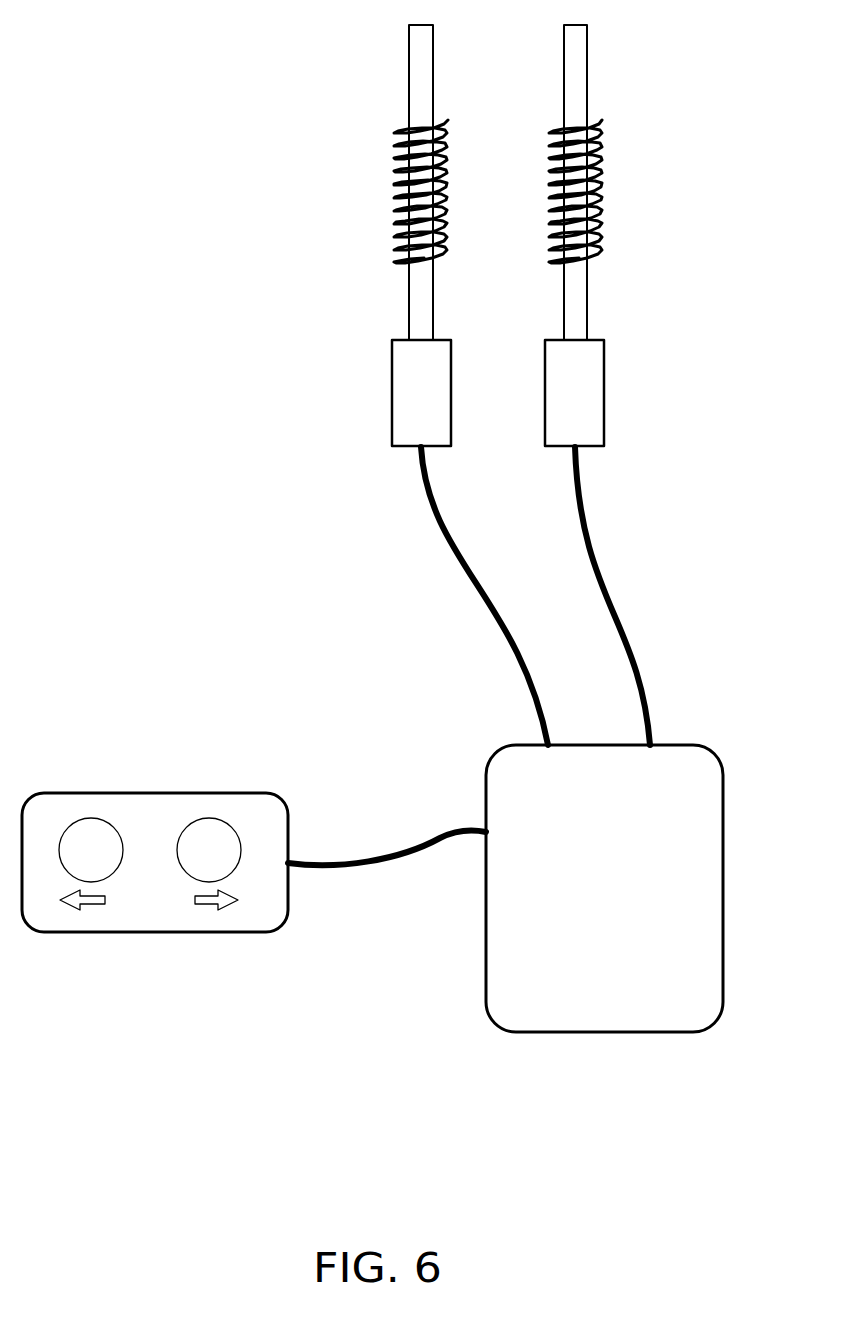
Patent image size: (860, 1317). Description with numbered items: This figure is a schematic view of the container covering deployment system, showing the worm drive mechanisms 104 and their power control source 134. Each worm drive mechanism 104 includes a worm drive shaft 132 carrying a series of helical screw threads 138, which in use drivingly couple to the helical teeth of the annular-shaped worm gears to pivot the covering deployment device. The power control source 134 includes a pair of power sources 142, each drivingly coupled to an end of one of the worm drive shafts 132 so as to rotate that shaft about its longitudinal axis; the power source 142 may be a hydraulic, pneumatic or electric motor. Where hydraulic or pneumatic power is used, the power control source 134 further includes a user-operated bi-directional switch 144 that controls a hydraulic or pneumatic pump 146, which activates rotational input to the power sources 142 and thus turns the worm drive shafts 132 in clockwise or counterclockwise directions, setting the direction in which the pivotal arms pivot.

The worm drive mechanism 104 is at (408, 235).
The worm drive shaft 132 is at (408, 318).
The power control source 134 is at (407, 739).
The helical screw threads 138 is at (395, 195).
The power source 142 is at (392, 385).
The user-operated bi-directional switch 144 is at (153, 793).
The hydraulic or pneumatic pump 146 is at (715, 752).